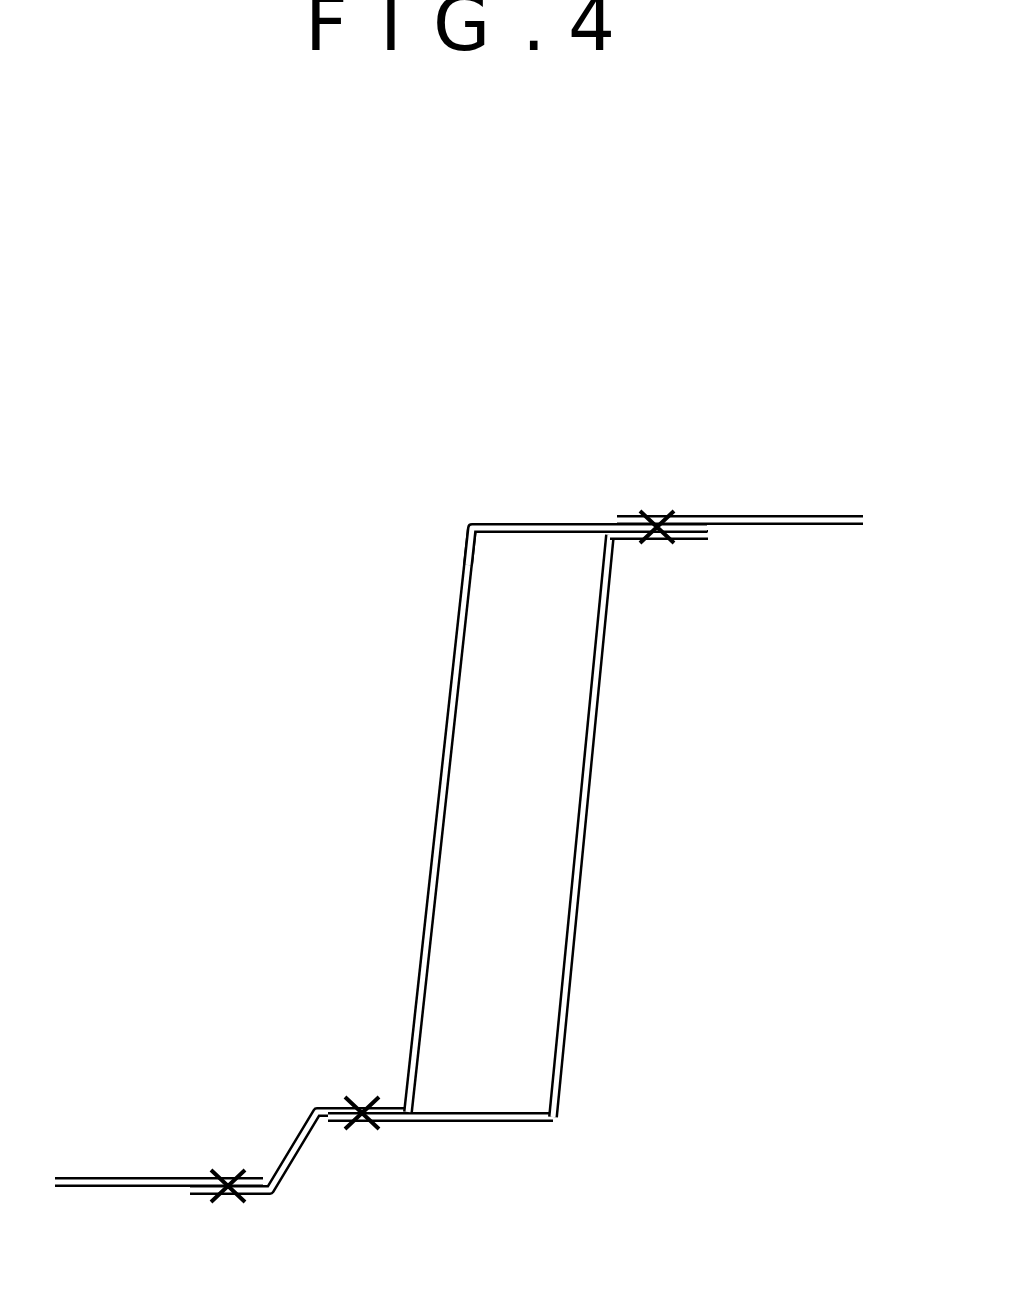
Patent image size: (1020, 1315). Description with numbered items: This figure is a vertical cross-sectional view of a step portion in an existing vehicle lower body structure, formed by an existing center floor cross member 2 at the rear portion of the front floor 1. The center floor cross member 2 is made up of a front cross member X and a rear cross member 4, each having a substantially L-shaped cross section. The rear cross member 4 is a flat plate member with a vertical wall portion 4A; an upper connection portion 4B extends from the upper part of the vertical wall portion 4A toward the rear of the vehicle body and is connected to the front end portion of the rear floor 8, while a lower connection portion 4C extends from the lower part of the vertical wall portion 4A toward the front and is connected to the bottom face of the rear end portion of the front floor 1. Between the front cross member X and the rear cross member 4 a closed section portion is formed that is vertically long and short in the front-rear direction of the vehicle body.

The front floor 1 is at (135, 1177).
The center floor cross member 2 is at (522, 753).
The rear cross member 4 is at (553, 890).
The vertical wall portion 4A is at (575, 936).
The upper connection portion 4B is at (695, 538).
The lower connection portion 4C is at (448, 1122).
The rear floor 8 is at (768, 515).
The front cross member X is at (428, 860).